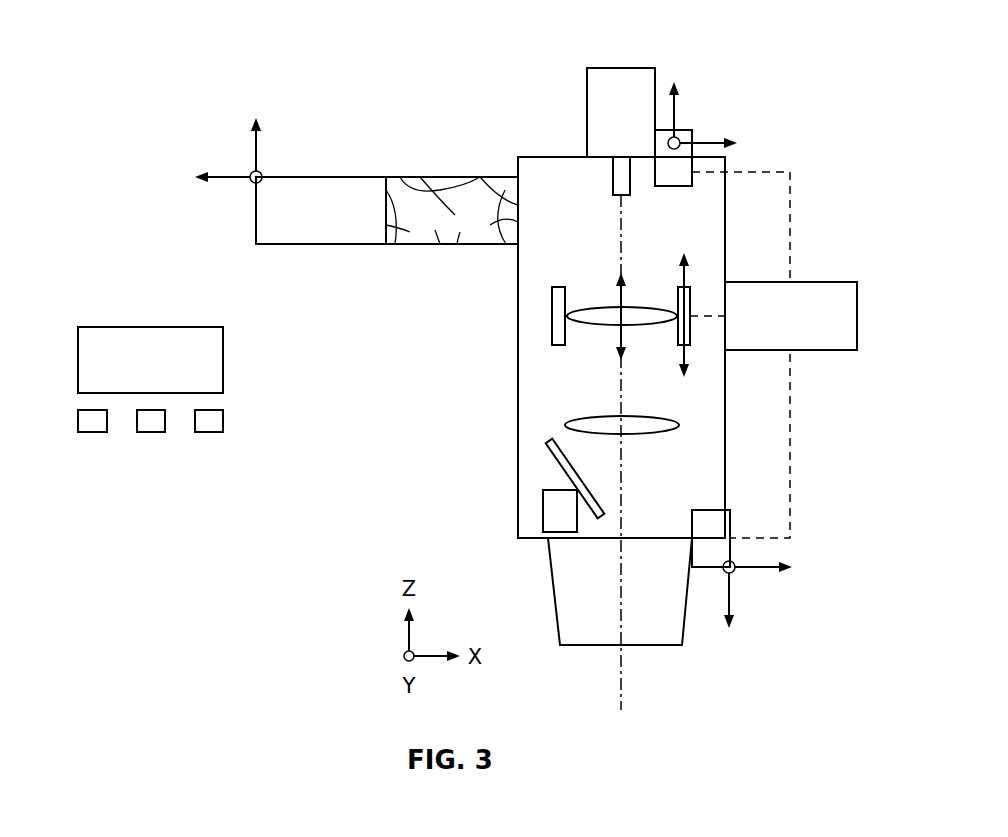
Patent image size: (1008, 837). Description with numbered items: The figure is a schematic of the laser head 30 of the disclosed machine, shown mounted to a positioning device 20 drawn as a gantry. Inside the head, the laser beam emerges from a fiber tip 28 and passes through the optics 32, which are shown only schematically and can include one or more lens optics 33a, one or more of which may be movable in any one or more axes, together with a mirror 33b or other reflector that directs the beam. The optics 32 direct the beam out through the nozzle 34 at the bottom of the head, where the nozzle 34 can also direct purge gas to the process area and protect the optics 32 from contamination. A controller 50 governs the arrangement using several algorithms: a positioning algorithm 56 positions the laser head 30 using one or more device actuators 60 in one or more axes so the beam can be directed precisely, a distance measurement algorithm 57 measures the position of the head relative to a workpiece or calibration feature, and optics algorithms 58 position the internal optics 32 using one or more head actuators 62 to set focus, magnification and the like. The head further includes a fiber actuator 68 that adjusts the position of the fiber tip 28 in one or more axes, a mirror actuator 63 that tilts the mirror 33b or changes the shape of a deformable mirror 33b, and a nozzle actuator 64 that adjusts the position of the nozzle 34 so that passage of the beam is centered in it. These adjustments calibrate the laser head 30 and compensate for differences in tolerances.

The laser head 30 is at (816, 29).
The positioning device 20 is at (455, 177).
The fiber tip 28 is at (613, 183).
The optics 32 is at (576, 279).
The lens optics 33a is at (592, 326).
The mirror 33b is at (557, 463).
The nozzle 34 is at (548, 585).
The controller 50 is at (118, 327).
The positioning algorithm 56 is at (92, 432).
The distance measurement algorithm 57 is at (151, 432).
The optics algorithms 58 is at (211, 432).
The device actuators 60 is at (318, 177).
The head actuators 62 is at (812, 282).
The mirror actuator 63 is at (543, 515).
The nozzle actuator 64 is at (730, 525).
The fiber actuator 68 is at (688, 130).